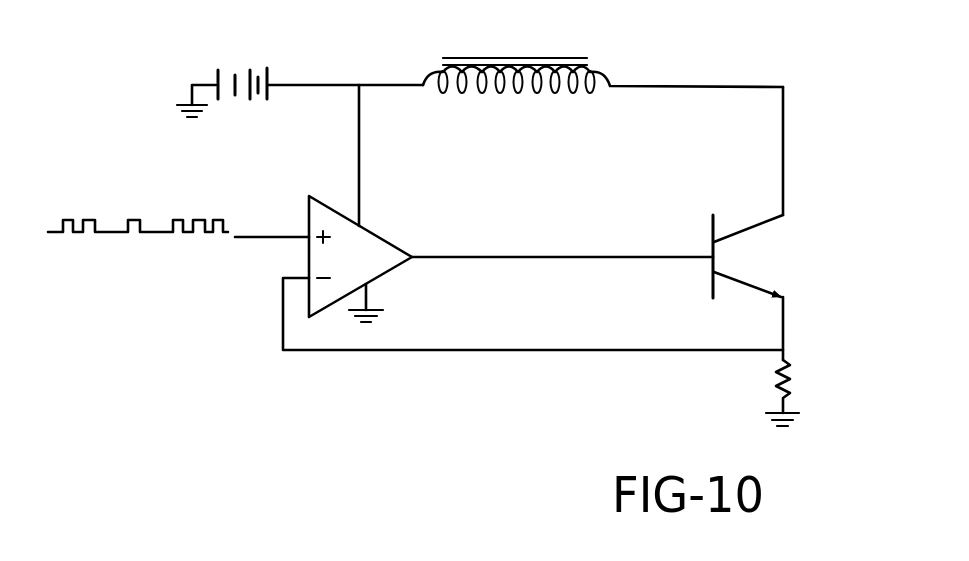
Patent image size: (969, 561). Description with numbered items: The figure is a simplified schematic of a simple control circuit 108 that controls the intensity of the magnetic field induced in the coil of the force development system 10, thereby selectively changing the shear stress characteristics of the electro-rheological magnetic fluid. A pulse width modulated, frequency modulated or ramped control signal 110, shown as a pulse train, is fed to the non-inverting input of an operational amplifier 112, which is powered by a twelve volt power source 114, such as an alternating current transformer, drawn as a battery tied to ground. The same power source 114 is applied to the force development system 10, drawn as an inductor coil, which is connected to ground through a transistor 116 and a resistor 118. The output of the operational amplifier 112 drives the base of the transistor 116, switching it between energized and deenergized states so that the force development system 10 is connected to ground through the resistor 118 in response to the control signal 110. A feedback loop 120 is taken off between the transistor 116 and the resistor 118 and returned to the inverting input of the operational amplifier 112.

The force development system 10 is at (562, 49).
The simple control circuit 108 is at (876, 64).
The control signal 110 is at (139, 215).
The operational amplifier 112 is at (384, 234).
The power source 114 is at (229, 63).
The transistor 116 is at (697, 243).
The resistor 118 is at (797, 384).
The feedback loop 120 is at (469, 354).